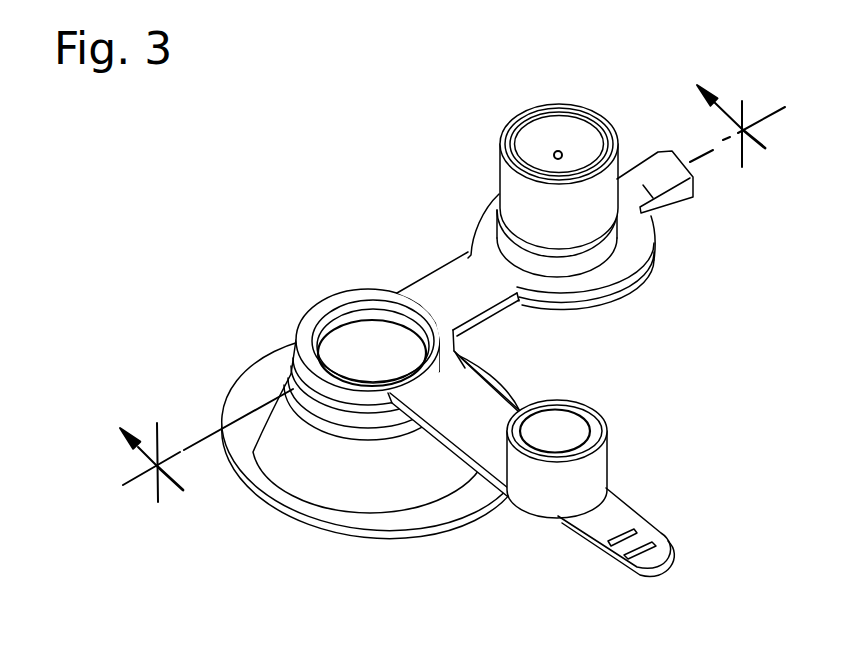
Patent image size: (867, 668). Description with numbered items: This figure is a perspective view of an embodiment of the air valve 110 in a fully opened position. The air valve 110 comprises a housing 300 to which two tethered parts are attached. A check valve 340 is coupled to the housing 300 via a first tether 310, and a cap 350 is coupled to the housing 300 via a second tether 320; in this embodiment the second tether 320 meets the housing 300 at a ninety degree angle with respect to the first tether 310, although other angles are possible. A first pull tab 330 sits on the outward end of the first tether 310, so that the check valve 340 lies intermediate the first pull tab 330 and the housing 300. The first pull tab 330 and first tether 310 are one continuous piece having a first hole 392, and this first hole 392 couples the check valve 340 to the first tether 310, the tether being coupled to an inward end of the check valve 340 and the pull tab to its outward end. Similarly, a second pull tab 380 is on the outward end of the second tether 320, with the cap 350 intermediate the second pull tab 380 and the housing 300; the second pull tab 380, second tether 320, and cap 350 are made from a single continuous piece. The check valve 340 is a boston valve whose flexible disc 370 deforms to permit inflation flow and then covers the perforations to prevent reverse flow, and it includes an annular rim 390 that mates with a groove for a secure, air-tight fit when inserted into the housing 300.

The air valve 110 is at (282, 241).
The housing 300 is at (302, 376).
The first tether 310 is at (448, 262).
The second tether 320 is at (477, 448).
The first pull tab 330 is at (690, 198).
The check valve 340 is at (567, 144).
The cap 350 is at (607, 441).
The flexible disc 370 is at (575, 132).
The second pull tab 380 is at (667, 540).
The annular rim 390 is at (563, 262).
The first hole 392 is at (600, 262).